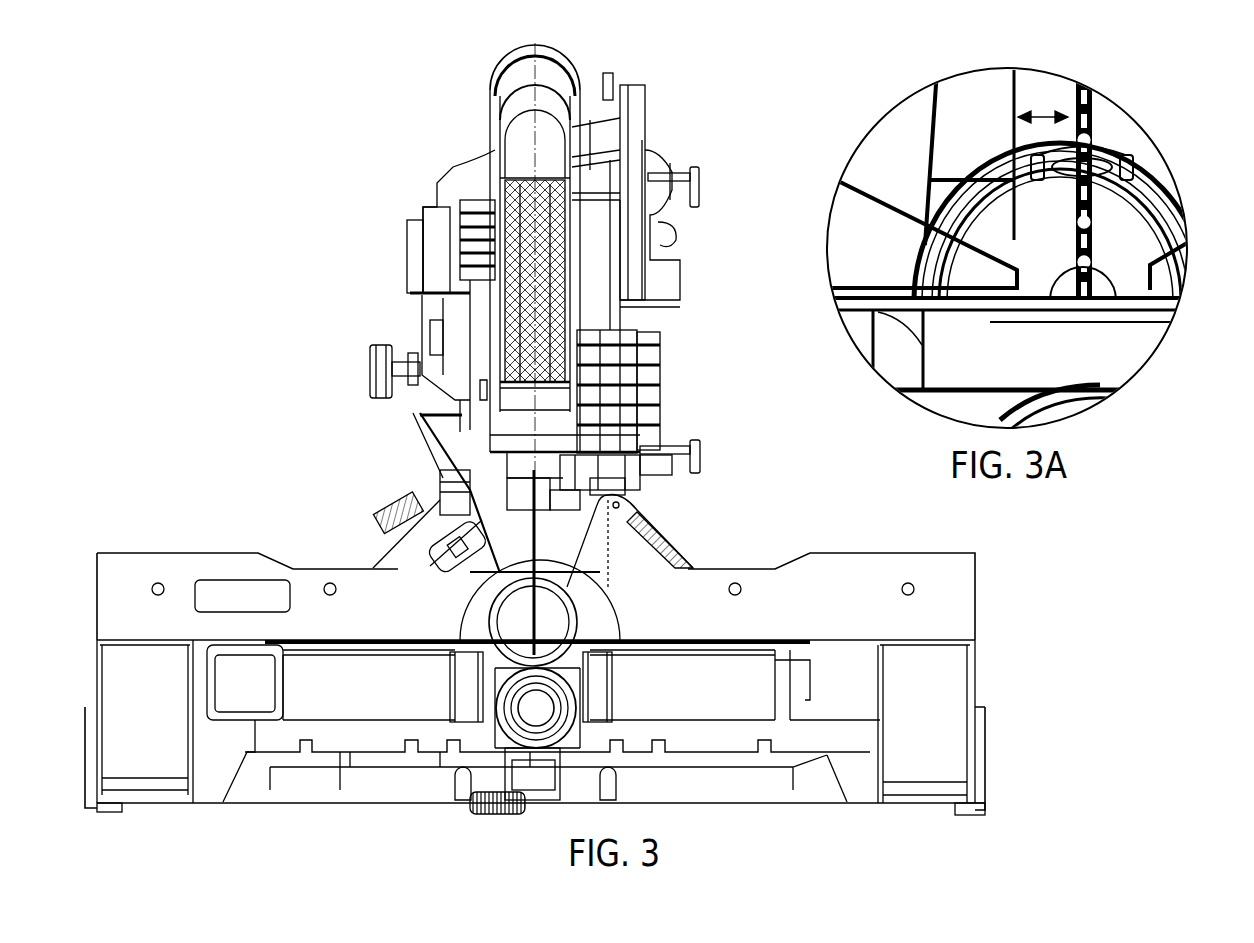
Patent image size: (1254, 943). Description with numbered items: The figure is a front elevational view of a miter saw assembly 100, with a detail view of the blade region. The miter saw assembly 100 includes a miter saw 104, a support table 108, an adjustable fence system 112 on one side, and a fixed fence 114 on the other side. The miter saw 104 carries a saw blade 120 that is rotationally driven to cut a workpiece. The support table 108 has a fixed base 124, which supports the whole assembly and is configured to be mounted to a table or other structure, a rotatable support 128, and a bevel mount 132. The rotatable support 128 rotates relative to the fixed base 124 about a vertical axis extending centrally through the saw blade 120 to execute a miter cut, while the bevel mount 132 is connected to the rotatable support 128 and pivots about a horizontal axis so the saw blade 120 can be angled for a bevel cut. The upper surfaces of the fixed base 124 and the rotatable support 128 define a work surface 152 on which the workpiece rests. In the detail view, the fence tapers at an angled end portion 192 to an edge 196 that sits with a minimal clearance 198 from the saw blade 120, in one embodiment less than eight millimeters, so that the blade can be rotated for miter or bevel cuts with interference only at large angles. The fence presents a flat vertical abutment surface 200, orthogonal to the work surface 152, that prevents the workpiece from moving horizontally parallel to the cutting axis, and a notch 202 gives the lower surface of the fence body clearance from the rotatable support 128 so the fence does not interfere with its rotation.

In FIG. 3, the miter saw assembly 100 is at (264, 190).
In FIG. 3, the miter saw 104 is at (398, 190).
In FIG. 3, the support table 108 is at (1052, 740).
In FIG. 3, the adjustable fence system 112 is at (206, 524).
In FIG. 3, the fixed fence 114 is at (816, 518).
In FIG. 3A, the saw blade 120 is at (1097, 136).
In FIG. 3, the fixed base 124 is at (937, 660).
In FIG. 3, the rotatable support 128 is at (676, 688).
In FIG. 3, the bevel mount 132 is at (405, 557).
In FIG. 3, the work surface 152 is at (382, 630).
In FIG. 3A, the angled end portion 192 is at (888, 220).
In FIG. 3A, the edge 196 is at (1020, 292).
In FIG. 3A, the clearance 198 is at (1041, 116).
In FIG. 3A, the flat vertical abutment surface 200 is at (894, 264).
In FIG. 3, the notch 202 is at (280, 650).